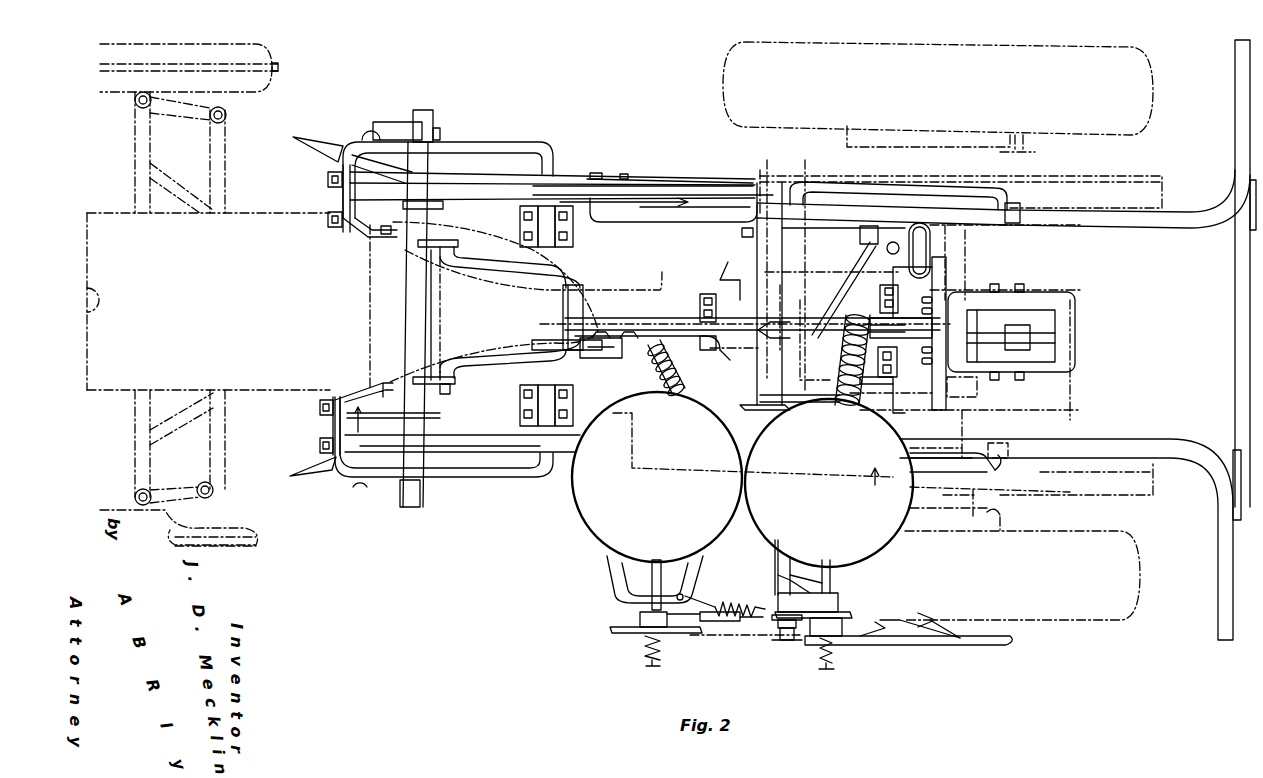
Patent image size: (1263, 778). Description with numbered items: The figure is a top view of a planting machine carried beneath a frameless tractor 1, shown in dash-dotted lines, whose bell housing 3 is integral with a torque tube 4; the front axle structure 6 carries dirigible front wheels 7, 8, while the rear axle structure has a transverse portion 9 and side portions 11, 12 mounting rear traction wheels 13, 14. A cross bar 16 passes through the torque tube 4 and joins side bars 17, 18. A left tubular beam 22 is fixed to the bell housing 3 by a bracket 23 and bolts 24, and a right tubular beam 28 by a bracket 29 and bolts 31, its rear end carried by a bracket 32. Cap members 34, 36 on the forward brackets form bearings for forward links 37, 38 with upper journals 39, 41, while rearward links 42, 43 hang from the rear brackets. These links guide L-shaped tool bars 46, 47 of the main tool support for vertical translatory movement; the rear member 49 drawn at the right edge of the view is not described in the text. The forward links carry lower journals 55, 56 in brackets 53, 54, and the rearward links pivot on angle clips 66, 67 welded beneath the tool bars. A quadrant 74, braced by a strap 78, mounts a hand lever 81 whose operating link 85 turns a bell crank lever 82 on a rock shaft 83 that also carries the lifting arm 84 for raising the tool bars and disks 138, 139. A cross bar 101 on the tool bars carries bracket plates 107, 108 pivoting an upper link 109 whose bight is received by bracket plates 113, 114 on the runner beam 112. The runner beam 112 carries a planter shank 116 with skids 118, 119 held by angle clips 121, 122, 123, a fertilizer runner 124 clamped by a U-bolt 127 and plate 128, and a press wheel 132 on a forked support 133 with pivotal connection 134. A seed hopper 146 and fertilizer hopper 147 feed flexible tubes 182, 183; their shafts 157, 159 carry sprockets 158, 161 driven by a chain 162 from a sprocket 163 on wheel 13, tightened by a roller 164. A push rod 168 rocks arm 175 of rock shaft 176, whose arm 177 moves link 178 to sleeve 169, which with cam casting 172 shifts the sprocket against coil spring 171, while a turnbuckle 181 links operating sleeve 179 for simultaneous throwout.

The tractor 1 is at (265, 222).
The bell housing 3 is at (368, 292).
The torque tube 4 is at (654, 293).
The front axle structure 6 is at (132, 194).
The front wheel 7 is at (232, 512).
The front wheel 8 is at (232, 52).
The transverse portion 9 is at (972, 248).
The side portion 11 is at (995, 512).
The side portion 12 is at (1012, 150).
The rear traction wheel 13 is at (1130, 618).
The rear traction wheel 14 is at (1150, 80).
The cross bar 16 is at (755, 250).
The side bar 17 is at (1108, 490).
The side bar 18 is at (1128, 182).
The tubular beam 22 is at (560, 458).
The bracket 23 is at (340, 396).
The bolts 24 is at (366, 401).
The tubular beam 28 is at (712, 186).
The bracket 29 is at (350, 230).
The bolts 31 is at (385, 226).
The bracket 32 is at (757, 183).
The cap member 34 is at (322, 436).
The cap member 36 is at (328, 196).
The link 37 is at (480, 480).
The link 38 is at (493, 142).
The upper journal 39 is at (322, 455).
The upper journal 41 is at (330, 160).
The rearward link 42 is at (990, 468).
The rearward link 43 is at (860, 182).
The L-shaped tool bar 46 is at (582, 440).
The L-shaped tool bar 47 is at (690, 222).
The rear frame bar 49 is at (1236, 414).
The bracket 53 is at (582, 418).
The bracket 54 is at (578, 230).
The lower journal 55 is at (530, 464).
The lower journal 56 is at (538, 170).
The angle clip 66 is at (1005, 443).
The angle clip 67 is at (1012, 223).
The quadrant 74 is at (640, 186).
The strap 78 is at (602, 173).
The hand lever 81 is at (640, 208).
The bell crank lever 82 is at (806, 230).
The rock shaft 83 is at (800, 288).
The lifting arm 84 is at (893, 418).
The operating link 85 is at (665, 222).
The cross bar 101 is at (405, 328).
The bracket plate 107 is at (455, 381).
The bracket plate 108 is at (488, 243).
The upper link 109 is at (522, 270).
The runner beam 112 is at (693, 332).
The bracket plate 113 is at (578, 364).
The bracket plate 114 is at (562, 304).
The planter shank 116 is at (904, 327).
The skid 118 is at (742, 374).
The skid 119 is at (728, 266).
The angle clip 121 is at (896, 365).
The angle clip 122 is at (898, 290).
The angle clips 123 is at (712, 302).
The runner 124 is at (632, 360).
The U-bolt 127 is at (618, 330).
The plate 128 is at (640, 330).
The press wheel 132 is at (1060, 343).
The forked support 133 is at (838, 318).
The pivotal connection 134 is at (740, 360).
The disk 138 is at (326, 470).
The disk 139 is at (327, 146).
The seed hopper 146 is at (888, 542).
The fertilizer hopper 147 is at (590, 520).
The drive shaft 157 is at (832, 576).
The drive sprocket 158 is at (795, 640).
The shaft 159 is at (648, 570).
The drive sprocket 161 is at (622, 633).
The chain 162 is at (730, 638).
The drive sprocket 163 is at (992, 645).
The roller 164 is at (775, 642).
The push rod 168 is at (800, 392).
The sleeve 169 is at (836, 640).
The coil spring 171 is at (832, 656).
The cam casting 172 is at (848, 610).
The arm 175 is at (745, 408).
The rock shaft 176 is at (760, 600).
The arm 177 is at (808, 593).
The link 178 is at (850, 622).
The operating sleeve 179 is at (640, 616).
The turnbuckle 181 is at (712, 624).
The flexible tube 182 is at (836, 378).
The flexible tube 183 is at (672, 392).